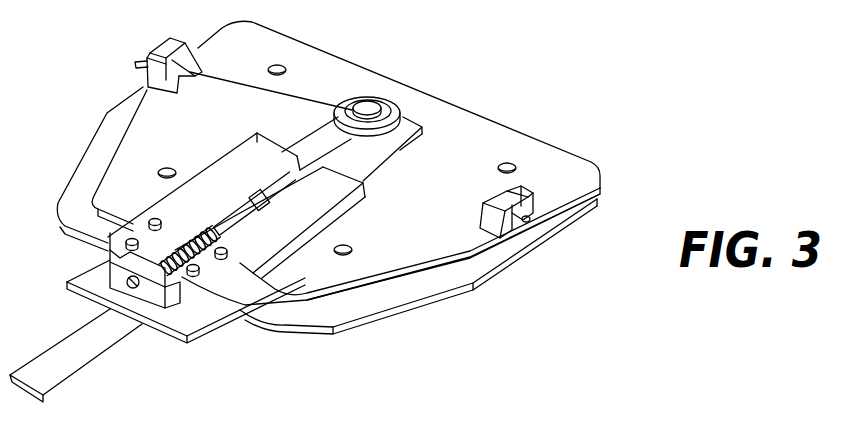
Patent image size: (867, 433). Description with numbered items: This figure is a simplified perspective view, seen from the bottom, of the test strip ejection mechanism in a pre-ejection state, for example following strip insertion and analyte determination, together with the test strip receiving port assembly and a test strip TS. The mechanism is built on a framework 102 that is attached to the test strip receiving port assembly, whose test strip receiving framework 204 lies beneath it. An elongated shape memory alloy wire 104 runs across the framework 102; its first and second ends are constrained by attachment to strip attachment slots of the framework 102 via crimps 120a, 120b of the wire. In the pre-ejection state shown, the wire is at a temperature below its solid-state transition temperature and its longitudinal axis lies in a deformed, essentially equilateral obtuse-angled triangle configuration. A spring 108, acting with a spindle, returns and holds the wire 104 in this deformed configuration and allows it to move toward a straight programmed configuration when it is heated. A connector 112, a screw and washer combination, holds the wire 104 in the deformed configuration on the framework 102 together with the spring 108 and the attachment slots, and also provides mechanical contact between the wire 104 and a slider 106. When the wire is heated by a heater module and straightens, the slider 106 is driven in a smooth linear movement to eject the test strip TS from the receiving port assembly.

The framework 102 is at (563, 177).
The elongated shape memory alloy wire 104 is at (440, 150).
The slider 106 is at (400, 145).
The spring 108 is at (181, 284).
The connector 112 is at (380, 112).
The crimp 120a is at (525, 219).
The crimp 120b is at (147, 62).
The test strip receiving framework 204 is at (305, 312).
The test strip TS is at (43, 372).